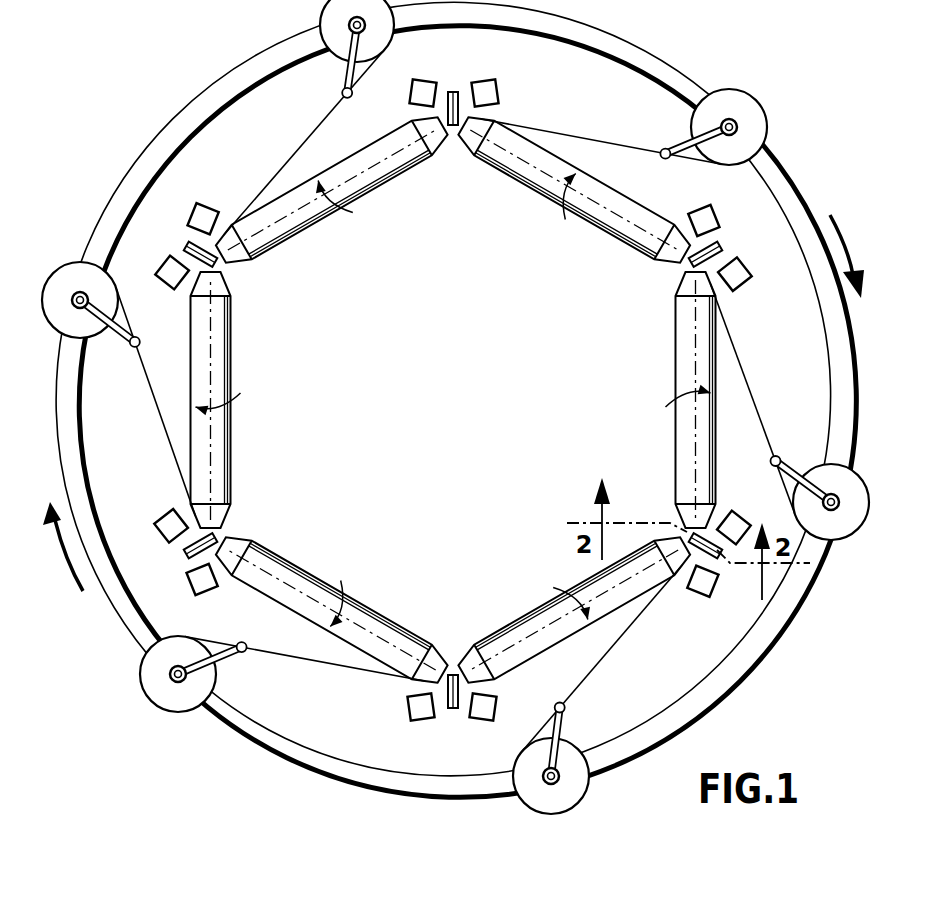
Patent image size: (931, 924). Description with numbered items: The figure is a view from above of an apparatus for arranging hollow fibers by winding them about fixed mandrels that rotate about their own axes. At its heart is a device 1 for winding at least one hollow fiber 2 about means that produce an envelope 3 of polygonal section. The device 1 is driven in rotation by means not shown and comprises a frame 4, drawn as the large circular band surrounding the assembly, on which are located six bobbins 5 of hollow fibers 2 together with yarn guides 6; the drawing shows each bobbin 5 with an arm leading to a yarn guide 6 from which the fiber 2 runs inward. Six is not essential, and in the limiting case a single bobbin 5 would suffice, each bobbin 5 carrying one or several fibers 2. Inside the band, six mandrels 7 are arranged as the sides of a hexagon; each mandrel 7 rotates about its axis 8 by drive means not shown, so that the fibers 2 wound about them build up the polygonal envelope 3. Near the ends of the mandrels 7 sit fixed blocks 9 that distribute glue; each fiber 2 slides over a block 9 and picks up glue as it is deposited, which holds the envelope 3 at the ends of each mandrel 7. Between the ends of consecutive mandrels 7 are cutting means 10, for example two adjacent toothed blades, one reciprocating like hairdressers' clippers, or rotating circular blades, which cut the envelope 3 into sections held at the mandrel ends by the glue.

The device 1 is at (758, 680).
The hollow fiber 2 is at (612, 144).
The envelope 3 is at (715, 244).
The frame 4 is at (793, 208).
The bobbin 5 is at (764, 111).
The yarn guide 6 is at (342, 92).
The mandrel 7 is at (676, 340).
The axis 8 is at (621, 228).
The fixed block 9 is at (500, 84).
The cutting means 10 is at (457, 92).